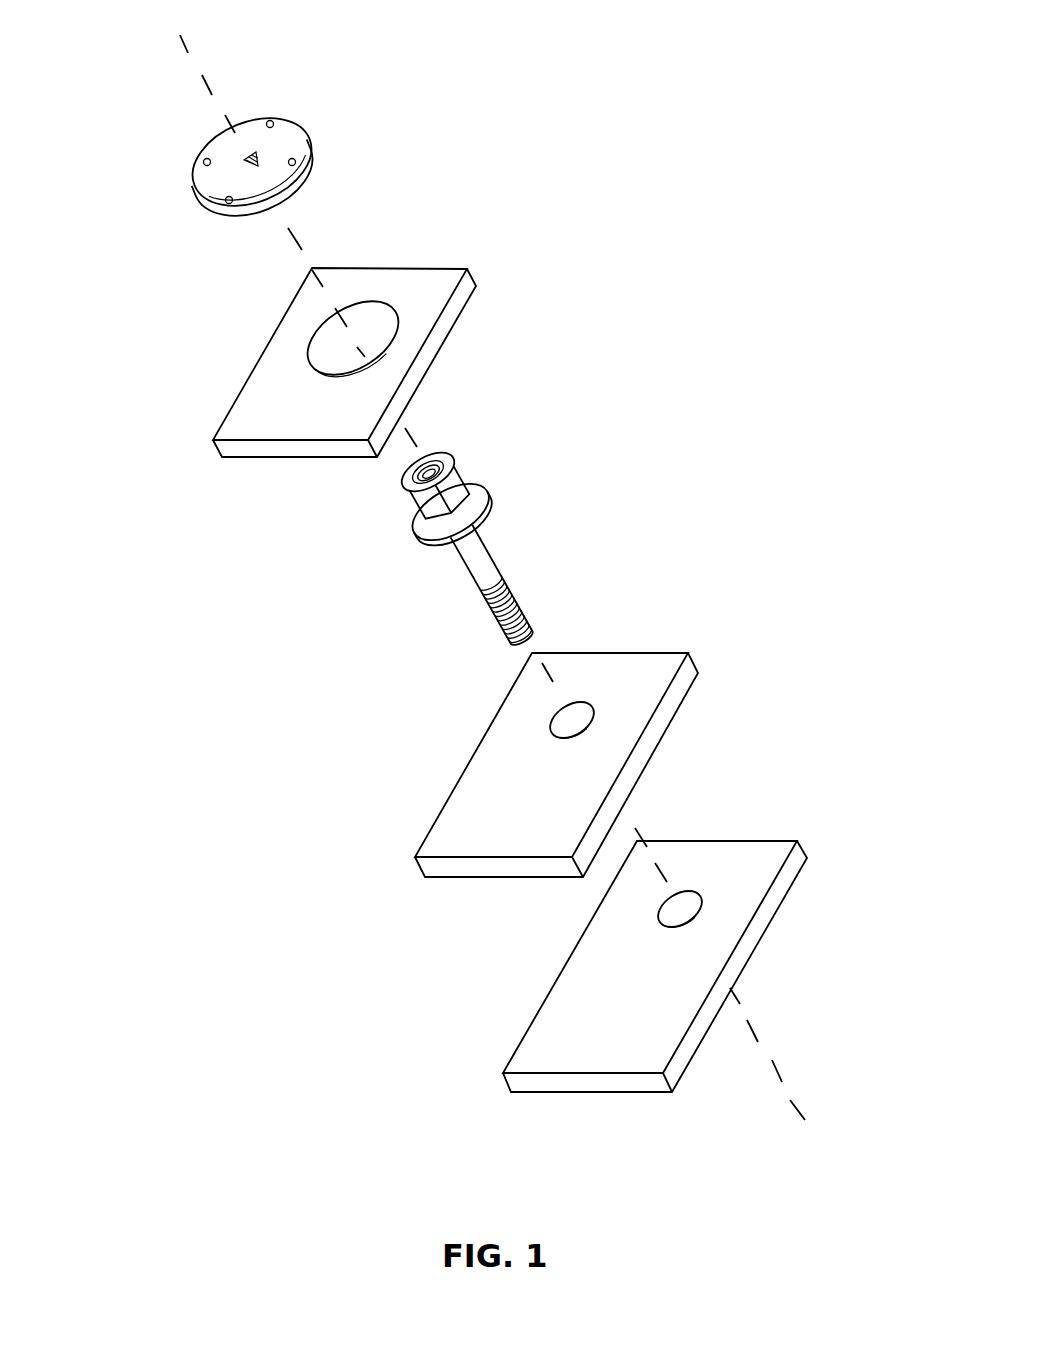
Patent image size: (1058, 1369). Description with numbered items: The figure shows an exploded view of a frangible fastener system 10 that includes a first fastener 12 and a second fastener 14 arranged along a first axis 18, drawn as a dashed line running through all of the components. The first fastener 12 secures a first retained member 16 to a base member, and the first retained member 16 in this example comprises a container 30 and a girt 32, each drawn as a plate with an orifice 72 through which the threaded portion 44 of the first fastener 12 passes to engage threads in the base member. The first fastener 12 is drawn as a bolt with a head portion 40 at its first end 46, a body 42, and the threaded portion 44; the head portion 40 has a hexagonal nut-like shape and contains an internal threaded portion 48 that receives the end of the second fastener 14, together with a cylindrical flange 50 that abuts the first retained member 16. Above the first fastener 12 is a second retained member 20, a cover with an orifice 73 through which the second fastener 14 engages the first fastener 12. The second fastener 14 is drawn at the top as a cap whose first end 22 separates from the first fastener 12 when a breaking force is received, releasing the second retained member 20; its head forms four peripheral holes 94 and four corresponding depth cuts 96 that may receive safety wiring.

The frangible fastener system 10 is at (587, 237).
The first fastener 12 is at (582, 464).
The second fastener 14 is at (355, 122).
The first retained member 16 is at (831, 832).
The first axis 18 is at (192, 40).
The second retained member 20 is at (220, 443).
The first end 22 is at (253, 133).
The container 30 is at (510, 1083).
The girt 32 is at (420, 868).
The head portion 40 is at (463, 482).
The body 42 is at (490, 547).
The threaded portion 44 is at (523, 597).
The first end 46 is at (428, 458).
The threaded portion 48 is at (437, 466).
The flange 50 is at (425, 540).
The orifice 72 is at (578, 712).
The orifice 73 is at (372, 338).
The peripheral holes 94 is at (270, 123).
The depth cuts 96 is at (307, 157).